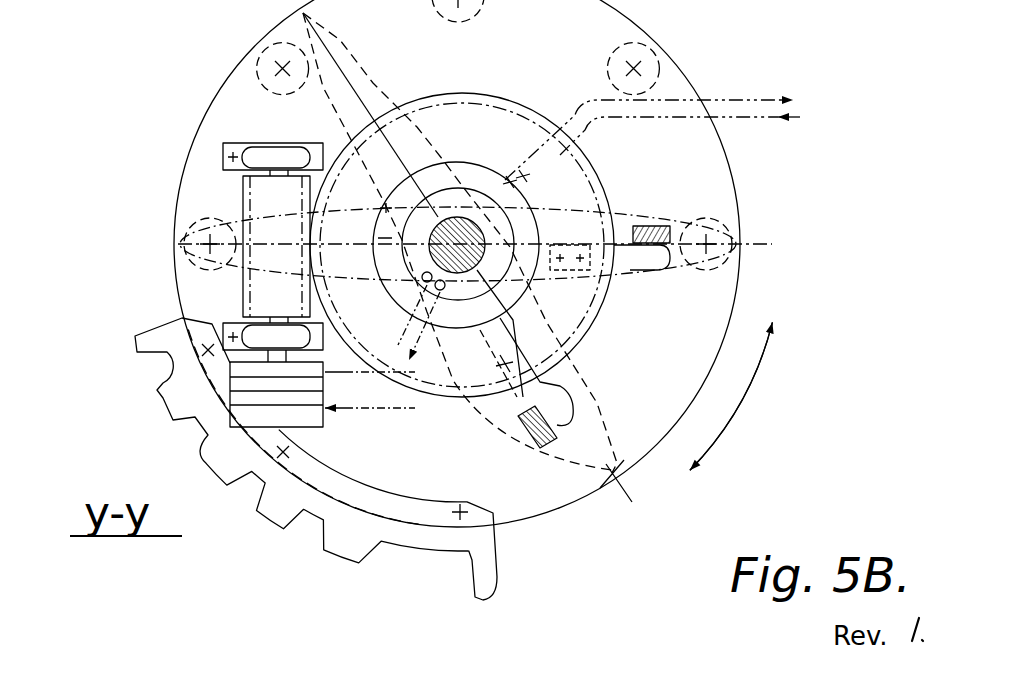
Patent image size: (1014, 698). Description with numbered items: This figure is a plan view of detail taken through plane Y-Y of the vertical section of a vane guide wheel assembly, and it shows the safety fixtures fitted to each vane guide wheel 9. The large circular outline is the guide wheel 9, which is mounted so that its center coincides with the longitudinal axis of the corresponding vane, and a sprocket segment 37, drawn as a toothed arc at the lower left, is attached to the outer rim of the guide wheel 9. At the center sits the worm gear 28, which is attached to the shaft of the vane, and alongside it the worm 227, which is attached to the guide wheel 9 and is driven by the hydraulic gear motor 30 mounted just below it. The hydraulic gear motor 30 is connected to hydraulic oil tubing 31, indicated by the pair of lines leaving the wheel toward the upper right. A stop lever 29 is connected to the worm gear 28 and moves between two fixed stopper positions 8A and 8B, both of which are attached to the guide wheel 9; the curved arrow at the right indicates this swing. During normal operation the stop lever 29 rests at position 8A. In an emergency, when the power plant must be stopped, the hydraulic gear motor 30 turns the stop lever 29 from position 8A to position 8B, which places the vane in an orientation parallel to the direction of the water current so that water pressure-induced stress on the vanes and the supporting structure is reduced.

The vane guide wheel 9 is at (235, 125).
The worm gear 28 is at (468, 133).
The worm 227 is at (265, 203).
The sprocket segment 37 is at (188, 397).
The hydraulic gear motor 30 is at (255, 389).
The fix stopper position 8A is at (700, 200).
The stop lever 29 is at (633, 258).
The fix stopper position 8B is at (528, 438).
The hydraulic oil tubing 31 is at (720, 117).